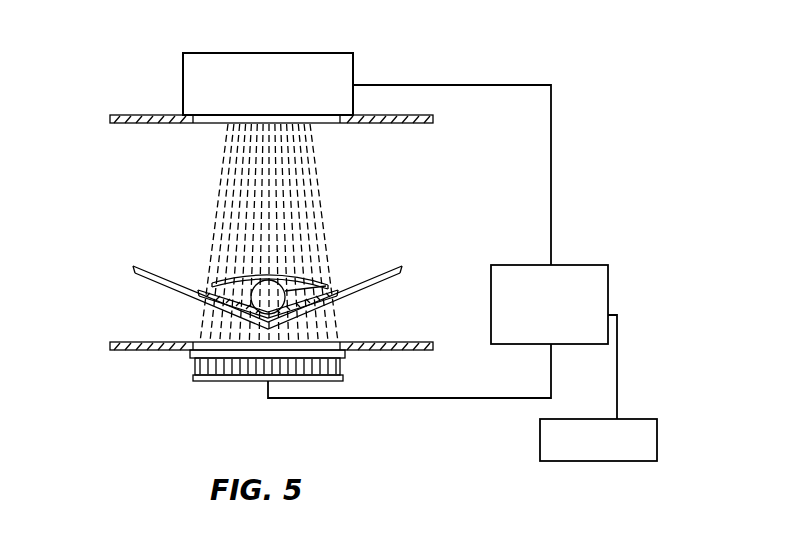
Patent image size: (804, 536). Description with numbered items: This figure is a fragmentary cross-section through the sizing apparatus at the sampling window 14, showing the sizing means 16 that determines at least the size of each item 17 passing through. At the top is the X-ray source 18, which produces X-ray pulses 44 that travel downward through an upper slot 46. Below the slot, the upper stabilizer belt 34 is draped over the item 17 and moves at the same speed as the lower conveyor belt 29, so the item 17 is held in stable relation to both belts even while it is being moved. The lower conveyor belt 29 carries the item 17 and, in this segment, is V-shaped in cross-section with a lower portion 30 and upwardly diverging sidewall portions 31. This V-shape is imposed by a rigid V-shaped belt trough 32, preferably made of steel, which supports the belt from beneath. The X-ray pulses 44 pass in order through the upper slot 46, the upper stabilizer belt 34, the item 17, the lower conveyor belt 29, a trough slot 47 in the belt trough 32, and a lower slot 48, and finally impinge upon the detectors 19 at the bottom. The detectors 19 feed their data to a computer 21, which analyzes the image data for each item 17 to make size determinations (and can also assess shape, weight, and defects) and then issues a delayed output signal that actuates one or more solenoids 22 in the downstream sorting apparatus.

The sampling window 14 is at (302, 242).
The sizing means 16 is at (398, 22).
The item 17 is at (303, 284).
The X-ray source 18 is at (268, 53).
The detectors 19 is at (192, 354).
The computer 21 is at (582, 265).
The solenoids 22 is at (577, 462).
The lower conveyor belt 29 is at (347, 280).
The lower portion 30 is at (252, 292).
The sidewall portions 31 is at (208, 290).
The belt trough 32 is at (140, 275).
The upper stabilizer belt 34 is at (263, 274).
The X-ray pulses 44 is at (222, 186).
The upper slot 46 is at (327, 123).
The trough slot 47 is at (197, 301).
The lower slot 48 is at (345, 342).